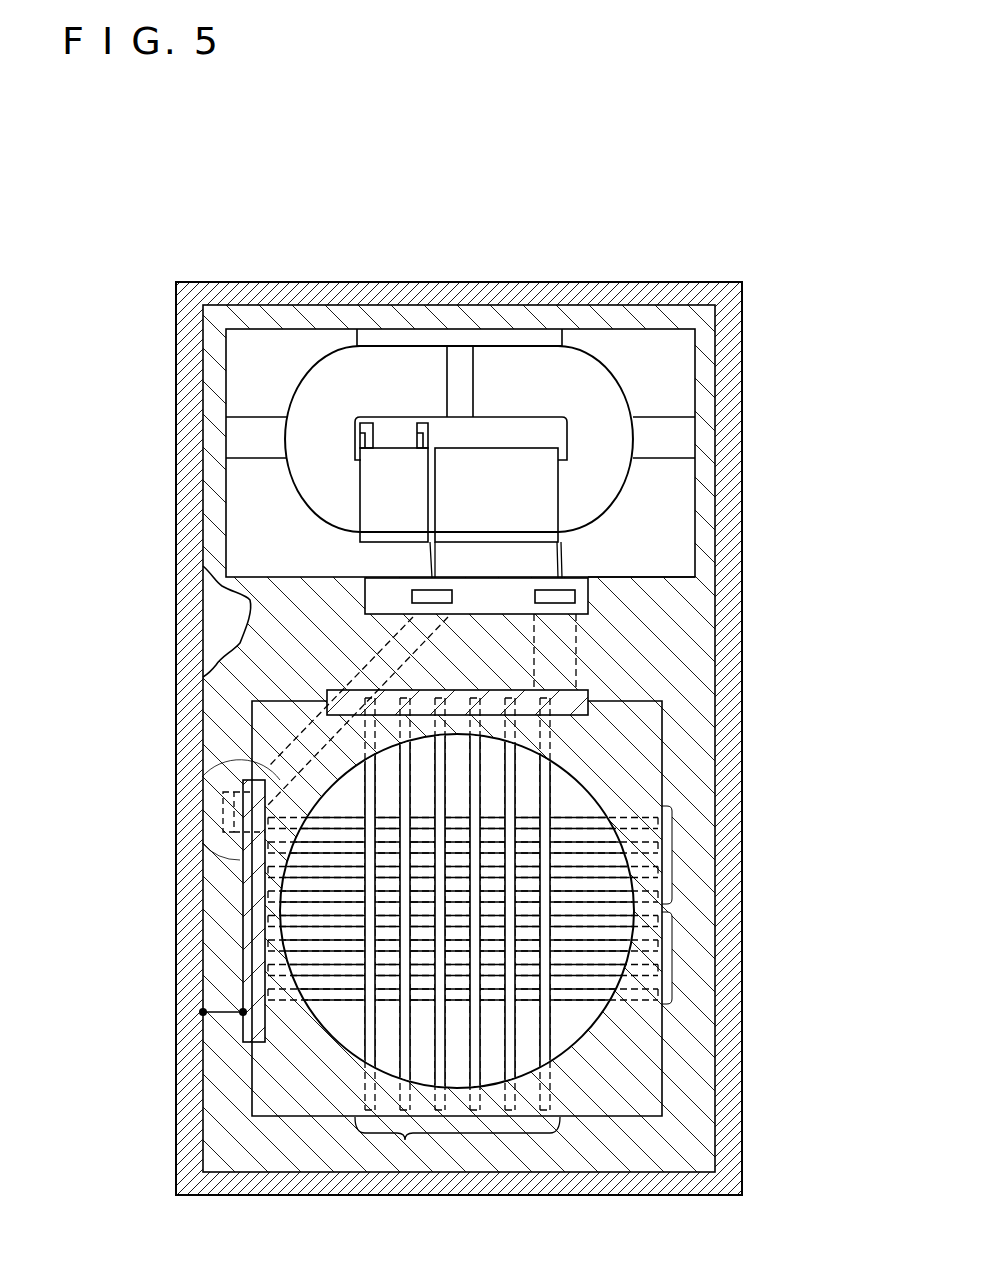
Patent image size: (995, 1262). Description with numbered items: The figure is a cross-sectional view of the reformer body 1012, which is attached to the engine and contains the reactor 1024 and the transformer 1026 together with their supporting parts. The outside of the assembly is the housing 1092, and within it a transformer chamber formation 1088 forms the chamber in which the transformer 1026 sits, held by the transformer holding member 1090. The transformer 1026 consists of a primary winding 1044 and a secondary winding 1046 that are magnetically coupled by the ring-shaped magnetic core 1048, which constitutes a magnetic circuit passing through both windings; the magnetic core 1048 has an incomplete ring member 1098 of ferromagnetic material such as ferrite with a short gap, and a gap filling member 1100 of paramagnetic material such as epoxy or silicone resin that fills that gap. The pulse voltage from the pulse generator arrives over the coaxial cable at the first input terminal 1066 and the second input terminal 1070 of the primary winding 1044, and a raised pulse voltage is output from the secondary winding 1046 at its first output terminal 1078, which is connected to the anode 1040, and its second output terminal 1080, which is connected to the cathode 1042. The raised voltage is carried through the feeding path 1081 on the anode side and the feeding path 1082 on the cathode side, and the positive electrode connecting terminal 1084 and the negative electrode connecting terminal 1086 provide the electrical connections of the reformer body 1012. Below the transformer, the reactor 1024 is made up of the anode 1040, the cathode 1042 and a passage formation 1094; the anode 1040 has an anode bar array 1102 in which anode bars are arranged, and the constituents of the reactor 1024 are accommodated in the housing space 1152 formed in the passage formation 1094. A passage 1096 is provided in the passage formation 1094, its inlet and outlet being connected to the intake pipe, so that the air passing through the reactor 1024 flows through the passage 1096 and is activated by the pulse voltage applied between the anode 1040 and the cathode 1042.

The reformer body 1012 is at (757, 284).
The housing 1092 is at (742, 408).
The passage formation 1094 is at (595, 778).
The housing space 1152 is at (225, 608).
The second input terminal 1070 is at (355, 433).
The transformer 1026 is at (283, 437).
The magnetic core 1048 is at (552, 217).
The transformer holding member 1090 is at (355, 334).
The gap filling member 1100 is at (463, 355).
The incomplete ring member 1098 is at (537, 342).
The first input terminal 1066 is at (433, 430).
The positive electrode connecting terminal 1084 is at (367, 423).
The negative electrode connecting terminal 1086 is at (422, 423).
The primary winding 1044 is at (360, 497).
The secondary winding 1046 is at (558, 498).
The feeding path on the anode side 1081 is at (577, 623).
The second output terminal 1080 is at (430, 592).
The first output terminal 1078 is at (562, 592).
The transformer chamber formation 1088 is at (675, 577).
The anode bar array 1102 is at (572, 705).
The reactor 1024 is at (665, 785).
The passage 1096 is at (583, 1018).
The cathode 1042 is at (665, 910).
The anode 1040 is at (405, 1140).
The feeding path on the cathode side 1082 is at (243, 860).